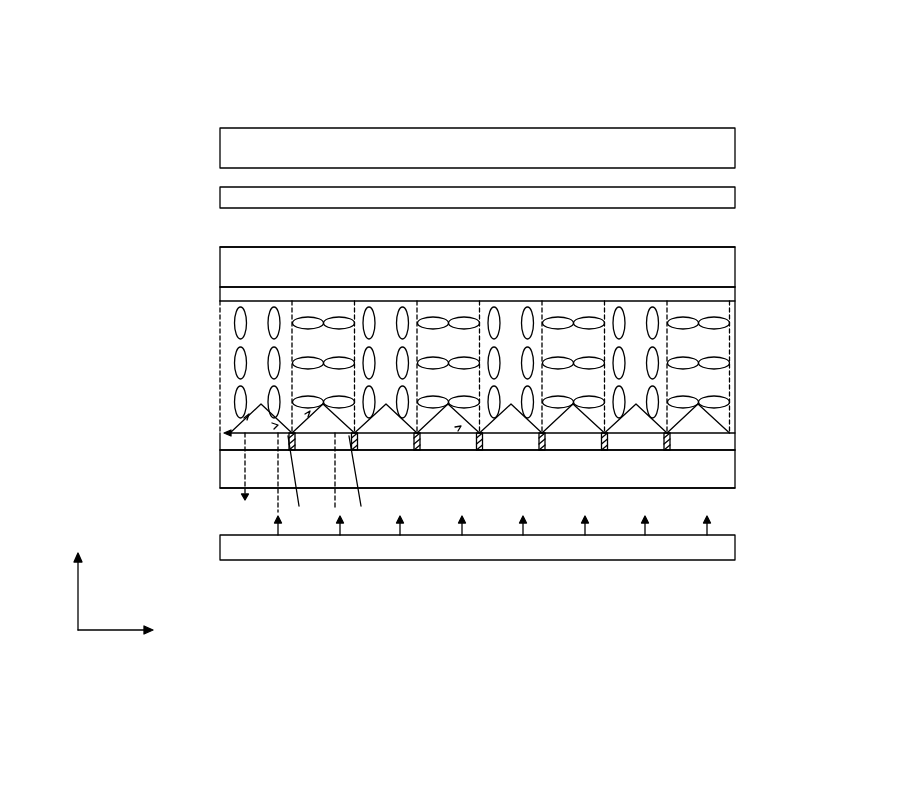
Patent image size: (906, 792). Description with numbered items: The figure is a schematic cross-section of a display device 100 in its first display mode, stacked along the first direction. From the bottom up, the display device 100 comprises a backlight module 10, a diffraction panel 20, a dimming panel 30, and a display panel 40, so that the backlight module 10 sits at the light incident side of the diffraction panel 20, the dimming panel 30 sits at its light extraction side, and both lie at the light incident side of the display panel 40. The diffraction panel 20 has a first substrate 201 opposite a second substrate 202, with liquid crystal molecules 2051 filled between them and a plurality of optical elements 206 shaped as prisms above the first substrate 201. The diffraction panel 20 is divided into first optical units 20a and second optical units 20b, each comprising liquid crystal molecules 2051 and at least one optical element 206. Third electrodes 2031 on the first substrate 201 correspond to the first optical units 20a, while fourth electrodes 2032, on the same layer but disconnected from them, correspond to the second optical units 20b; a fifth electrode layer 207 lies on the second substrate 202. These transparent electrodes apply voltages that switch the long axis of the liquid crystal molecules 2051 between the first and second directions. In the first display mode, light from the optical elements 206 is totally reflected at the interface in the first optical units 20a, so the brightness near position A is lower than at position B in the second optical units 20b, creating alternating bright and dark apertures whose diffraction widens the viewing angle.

The display device 100 is at (462, 74).
The display panel 40 is at (218, 148).
The dimming panel 30 is at (218, 195).
The diffraction panel 20 is at (215, 248).
The second substrate 202 is at (722, 272).
The fifth electrode layer 207 is at (722, 299).
The liquid crystal molecules 2051 is at (445, 313).
The first optical unit 20a is at (518, 310).
The second optical unit 20b is at (573, 312).
The optical element 206 is at (720, 432).
The third electrode 2031 is at (512, 440).
The fourth electrode 2032 is at (567, 440).
The first substrate 201 is at (722, 476).
The backlight module 10 is at (219, 543).
The position near interface in first optical unit A is at (300, 479).
The position in second optical unit B is at (360, 479).